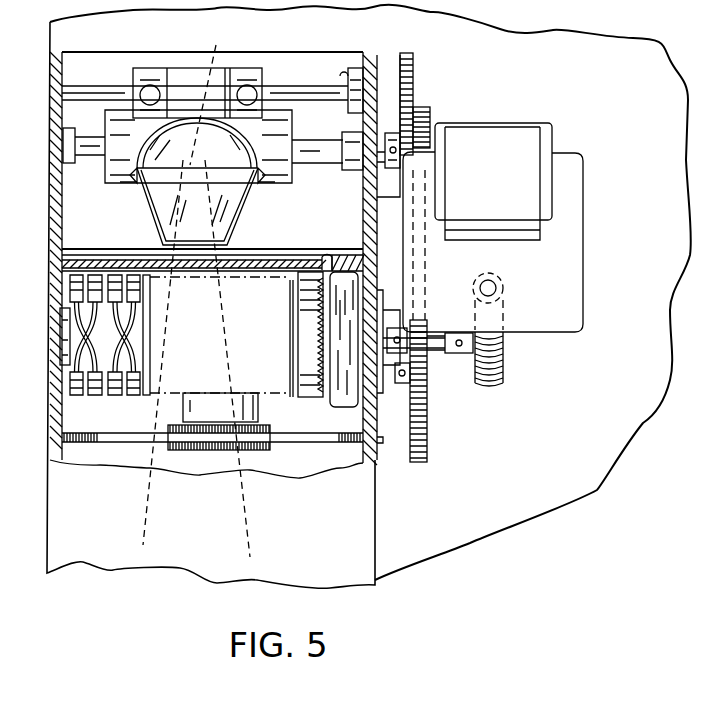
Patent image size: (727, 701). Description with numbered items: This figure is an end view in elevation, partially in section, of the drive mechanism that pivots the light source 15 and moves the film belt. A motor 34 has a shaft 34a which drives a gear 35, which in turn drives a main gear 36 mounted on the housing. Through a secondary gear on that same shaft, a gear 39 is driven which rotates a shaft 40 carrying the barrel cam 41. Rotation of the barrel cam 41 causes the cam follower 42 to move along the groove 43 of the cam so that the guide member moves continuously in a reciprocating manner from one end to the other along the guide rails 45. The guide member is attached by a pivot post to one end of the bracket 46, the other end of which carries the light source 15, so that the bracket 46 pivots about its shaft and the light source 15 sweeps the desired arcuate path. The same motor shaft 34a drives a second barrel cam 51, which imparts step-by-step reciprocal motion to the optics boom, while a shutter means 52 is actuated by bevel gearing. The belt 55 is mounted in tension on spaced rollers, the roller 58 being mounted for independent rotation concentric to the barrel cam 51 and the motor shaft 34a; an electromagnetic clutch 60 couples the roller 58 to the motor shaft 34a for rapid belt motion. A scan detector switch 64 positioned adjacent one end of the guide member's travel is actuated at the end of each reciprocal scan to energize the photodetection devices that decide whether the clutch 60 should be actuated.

The light source 15 is at (240, 213).
The motor 34 is at (583, 241).
The shaft 34a is at (414, 400).
The gear 35 is at (474, 413).
The main gear 36 is at (424, 110).
The gear 39 is at (413, 61).
The shaft 40 is at (382, 168).
The barrel cam 41 is at (293, 133).
The cam follower 42 is at (196, 290).
The groove 43 is at (137, 190).
The guide rails 45 is at (315, 83).
The bracket 46 is at (264, 77).
The barrel cam 51 is at (72, 375).
The shutter means 52 is at (65, 435).
The belt 55 is at (320, 403).
The roller 58 is at (290, 358).
The electromagnetic clutch 60 is at (337, 420).
The switch 64 is at (357, 68).